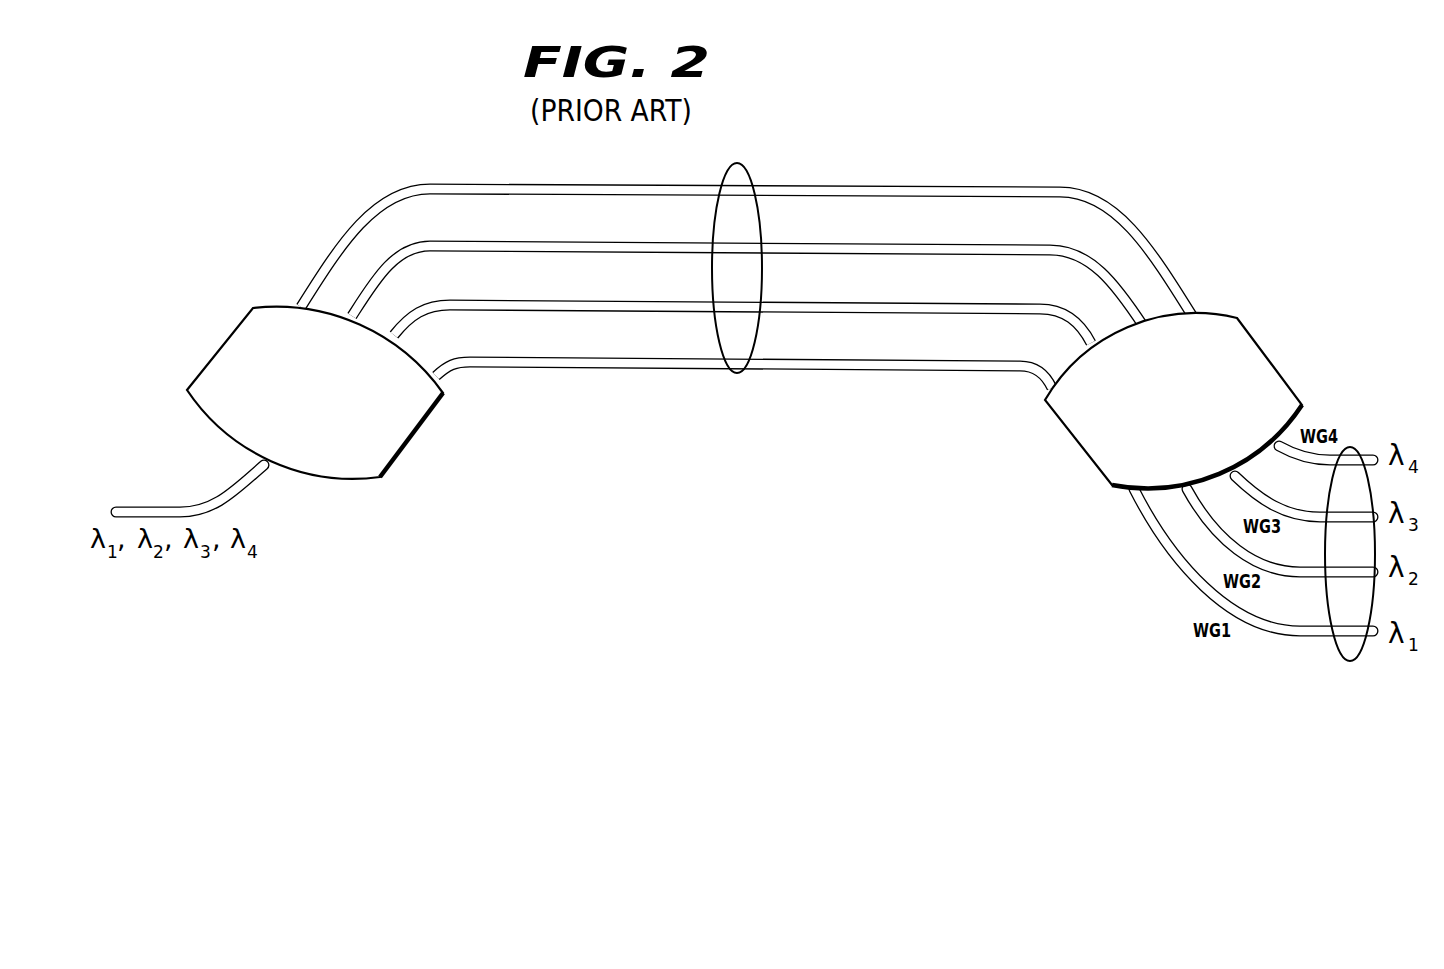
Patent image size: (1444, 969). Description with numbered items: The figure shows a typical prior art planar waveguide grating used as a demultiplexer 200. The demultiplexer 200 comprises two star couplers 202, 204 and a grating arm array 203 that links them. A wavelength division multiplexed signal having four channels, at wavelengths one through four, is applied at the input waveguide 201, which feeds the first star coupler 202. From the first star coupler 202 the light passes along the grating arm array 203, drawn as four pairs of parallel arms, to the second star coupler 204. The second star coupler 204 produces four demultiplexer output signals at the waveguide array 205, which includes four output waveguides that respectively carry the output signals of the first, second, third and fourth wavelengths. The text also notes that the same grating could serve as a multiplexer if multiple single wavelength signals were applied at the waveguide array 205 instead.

The demultiplexer 200 is at (639, 158).
The waveguide 201 is at (151, 507).
The star coupler 202 is at (339, 417).
The grating arm array 203 is at (737, 373).
The star coupler 204 is at (1194, 419).
The waveguide array 205 is at (1350, 661).